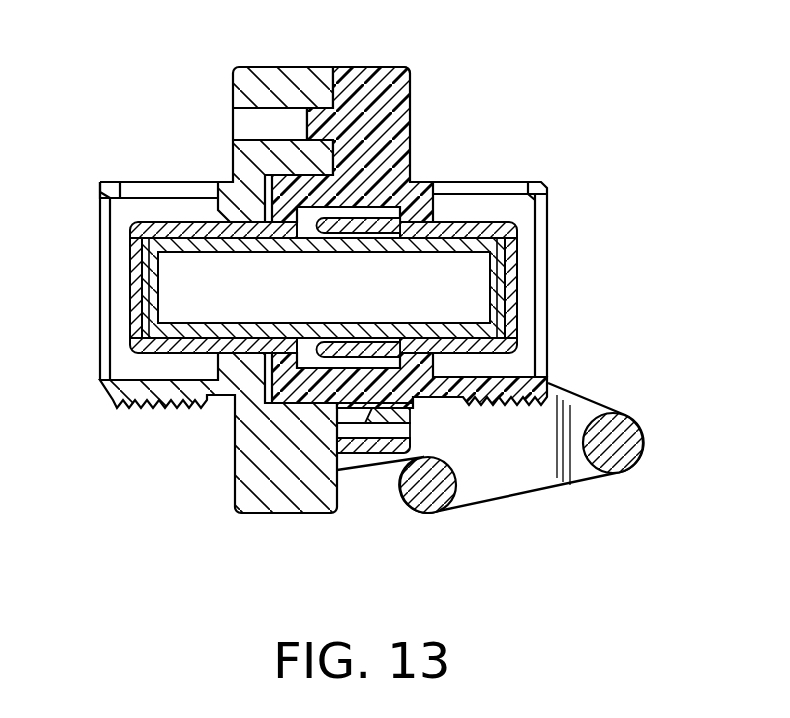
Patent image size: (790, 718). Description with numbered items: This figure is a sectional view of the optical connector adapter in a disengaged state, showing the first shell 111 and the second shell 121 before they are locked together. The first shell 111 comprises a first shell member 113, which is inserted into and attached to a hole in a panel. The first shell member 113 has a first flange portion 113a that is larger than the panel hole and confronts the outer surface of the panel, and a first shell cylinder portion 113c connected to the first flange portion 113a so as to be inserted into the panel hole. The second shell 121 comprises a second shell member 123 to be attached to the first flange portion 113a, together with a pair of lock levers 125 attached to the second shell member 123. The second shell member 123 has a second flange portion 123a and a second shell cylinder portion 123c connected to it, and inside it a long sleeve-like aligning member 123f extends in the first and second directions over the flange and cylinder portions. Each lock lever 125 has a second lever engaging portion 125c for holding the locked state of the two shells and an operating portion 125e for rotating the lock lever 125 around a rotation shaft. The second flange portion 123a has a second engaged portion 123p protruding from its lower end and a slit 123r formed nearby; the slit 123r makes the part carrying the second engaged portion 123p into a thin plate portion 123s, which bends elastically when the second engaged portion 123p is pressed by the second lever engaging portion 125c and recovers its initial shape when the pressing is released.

The first shell 111 is at (234, 82).
The first shell member 113 is at (242, 470).
The first flange portion 113a is at (267, 72).
The first shell cylinder portion 113c is at (120, 182).
The second shell 121 is at (412, 68).
The second shell member 123 is at (412, 107).
The second flange portion 123a is at (365, 67).
The second shell cylinder portion 123c is at (545, 182).
The aligning member 123f is at (165, 271).
The second engaged portion 123p is at (396, 465).
The slit 123r is at (412, 432).
The thin plate portion 123s is at (343, 470).
The lock lever 125 is at (580, 392).
The second lever engaging portion 125c is at (440, 500).
The operating portion 125e is at (632, 428).